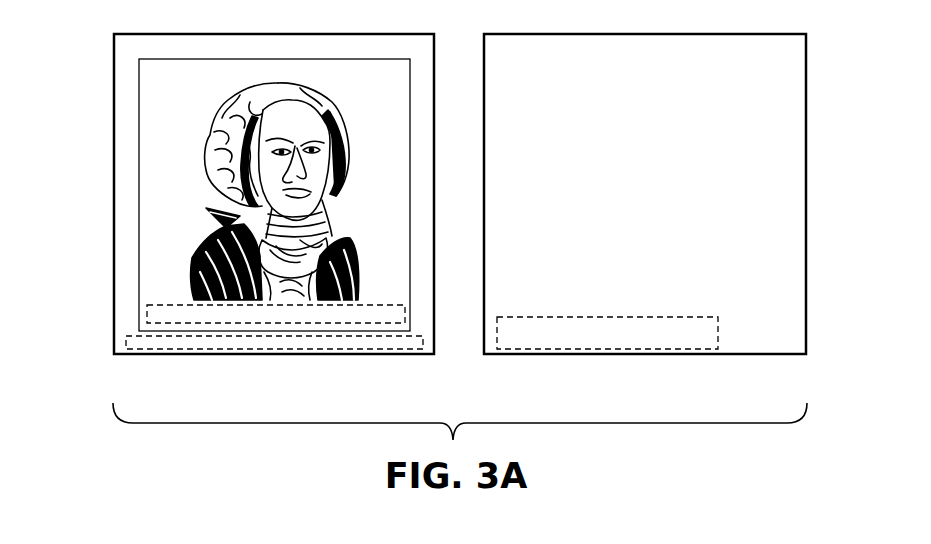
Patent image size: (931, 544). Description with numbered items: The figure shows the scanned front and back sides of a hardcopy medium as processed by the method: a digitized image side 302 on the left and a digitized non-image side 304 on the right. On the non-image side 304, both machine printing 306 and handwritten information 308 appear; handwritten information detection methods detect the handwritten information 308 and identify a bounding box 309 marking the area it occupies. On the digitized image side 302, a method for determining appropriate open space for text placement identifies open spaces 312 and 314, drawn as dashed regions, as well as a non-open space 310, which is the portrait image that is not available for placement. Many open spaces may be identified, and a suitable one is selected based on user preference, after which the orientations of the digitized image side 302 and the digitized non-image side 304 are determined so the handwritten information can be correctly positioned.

The digitized image side 302 is at (123, 56).
The digitized non-image side 304 is at (508, 48).
The machine printing 306 is at (582, 68).
The handwritten information 308 is at (712, 334).
The bounding box 309 is at (726, 352).
The non-open space 310 is at (333, 127).
The open space 312 is at (271, 350).
The open space 314 is at (142, 312).